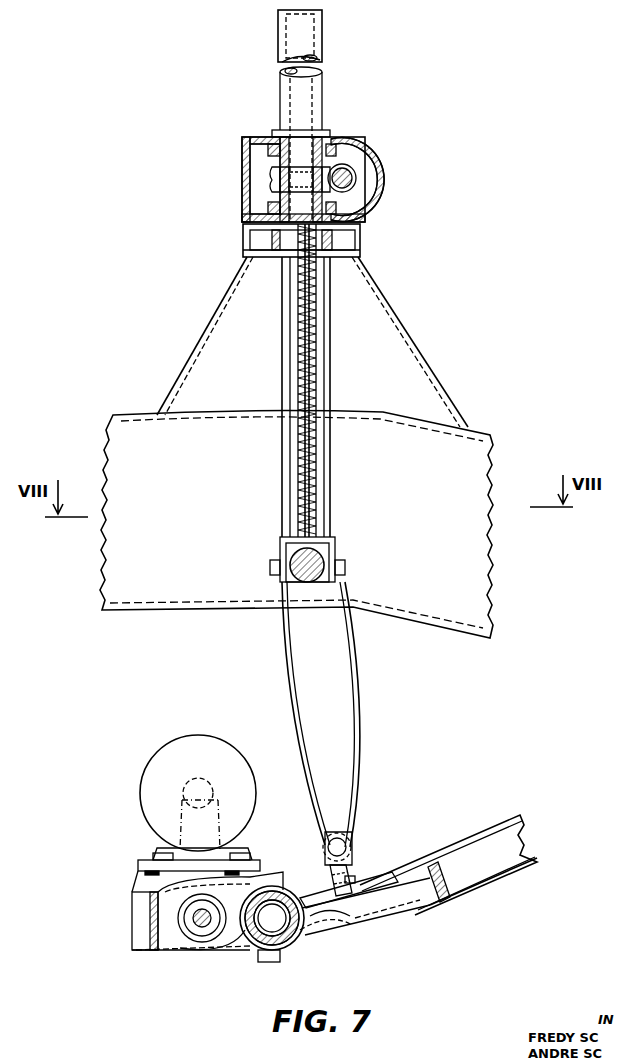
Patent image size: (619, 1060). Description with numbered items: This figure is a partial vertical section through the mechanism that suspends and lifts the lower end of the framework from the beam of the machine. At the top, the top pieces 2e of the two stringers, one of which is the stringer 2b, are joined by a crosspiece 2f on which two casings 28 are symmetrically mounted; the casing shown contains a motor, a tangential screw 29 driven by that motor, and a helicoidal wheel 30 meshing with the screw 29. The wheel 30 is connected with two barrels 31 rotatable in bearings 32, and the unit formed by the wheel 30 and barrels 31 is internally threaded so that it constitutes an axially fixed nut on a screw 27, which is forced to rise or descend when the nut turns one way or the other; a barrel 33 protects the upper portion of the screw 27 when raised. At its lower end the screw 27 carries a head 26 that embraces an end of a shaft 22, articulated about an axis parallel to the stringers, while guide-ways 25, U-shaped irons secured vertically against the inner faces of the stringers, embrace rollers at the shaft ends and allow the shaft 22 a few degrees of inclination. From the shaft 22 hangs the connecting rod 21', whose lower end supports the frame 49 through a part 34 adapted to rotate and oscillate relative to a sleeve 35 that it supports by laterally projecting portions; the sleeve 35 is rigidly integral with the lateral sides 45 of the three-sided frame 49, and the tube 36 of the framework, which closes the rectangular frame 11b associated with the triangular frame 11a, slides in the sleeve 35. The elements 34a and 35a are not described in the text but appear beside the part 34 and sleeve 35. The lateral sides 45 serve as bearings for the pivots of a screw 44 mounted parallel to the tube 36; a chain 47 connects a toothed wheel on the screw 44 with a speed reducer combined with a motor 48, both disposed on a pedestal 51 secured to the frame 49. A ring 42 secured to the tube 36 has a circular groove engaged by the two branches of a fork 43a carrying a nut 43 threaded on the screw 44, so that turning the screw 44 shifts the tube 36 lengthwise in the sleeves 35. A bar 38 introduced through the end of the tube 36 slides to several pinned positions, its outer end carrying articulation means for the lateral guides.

The barrel 33 is at (318, 92).
The barrel 31 is at (275, 156).
The bearing 32 is at (320, 147).
The helicoidal wheel 30 is at (285, 180).
The casing 28 is at (383, 163).
The tangential screw 29 is at (354, 182).
The crosspiece 2f is at (332, 241).
The top piece 2e is at (427, 378).
The guide-way 25 is at (322, 382).
The screw 27 is at (312, 316).
The stringer 2b is at (125, 418).
The head 26 is at (280, 545).
The shaft 22 is at (318, 560).
The connecting rod 21' is at (344, 714).
The part 34 is at (352, 878).
The sleeve 35 is at (308, 890).
The motor 48 is at (162, 762).
The chain 47 is at (180, 807).
The pedestal 51 is at (142, 870).
The screw 44 is at (192, 905).
The lateral side 45 is at (168, 928).
The frame 49 is at (150, 950).
The nut 43 is at (200, 930).
The fork 43a is at (235, 937).
The tube 36 is at (258, 950).
The bar 38 is at (285, 942).
The ring 42 is at (330, 932).
The link pin 35a is at (372, 930).
The pin axis 34a is at (425, 925).
The frame 11a is at (512, 852).
The frame 11b is at (463, 916).